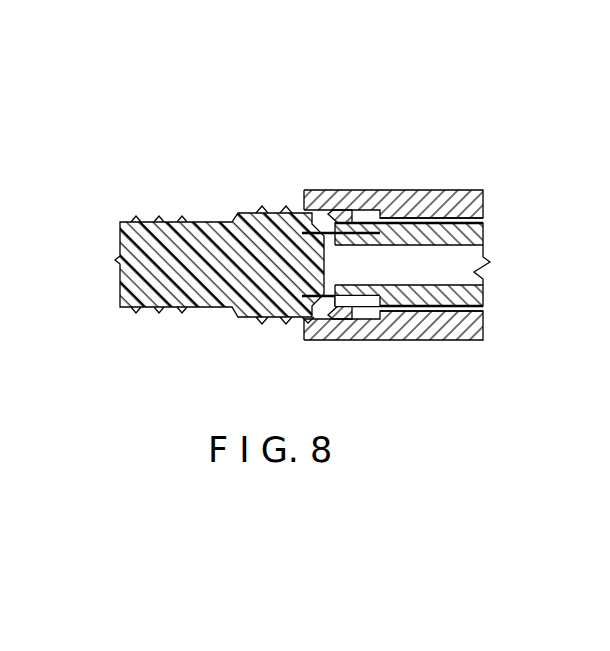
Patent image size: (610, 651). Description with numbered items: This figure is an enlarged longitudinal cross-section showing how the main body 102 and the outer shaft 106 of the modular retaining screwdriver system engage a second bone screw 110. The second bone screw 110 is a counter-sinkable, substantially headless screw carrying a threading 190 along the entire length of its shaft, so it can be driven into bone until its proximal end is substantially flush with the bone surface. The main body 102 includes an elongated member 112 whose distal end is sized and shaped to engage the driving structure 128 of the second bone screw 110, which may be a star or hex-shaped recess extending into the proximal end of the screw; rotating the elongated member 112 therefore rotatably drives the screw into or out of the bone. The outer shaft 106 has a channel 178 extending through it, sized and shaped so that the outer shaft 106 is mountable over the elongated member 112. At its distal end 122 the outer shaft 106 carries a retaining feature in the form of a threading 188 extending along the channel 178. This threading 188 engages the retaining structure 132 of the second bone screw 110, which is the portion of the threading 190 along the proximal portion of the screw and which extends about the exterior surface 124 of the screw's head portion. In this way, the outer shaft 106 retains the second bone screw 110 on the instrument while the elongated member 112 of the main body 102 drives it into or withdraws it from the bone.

The main body 102 is at (466, 210).
The outer shaft 106 is at (391, 150).
The second bone screw 110 is at (204, 188).
The elongated member 112 is at (458, 268).
The distal end 122 is at (304, 190).
The exterior surface 124 is at (270, 210).
The driving structure 128 is at (343, 210).
The retaining structure 132 is at (317, 323).
The channel 178 is at (432, 223).
The threading 188 is at (350, 322).
The threading 190 is at (157, 221).